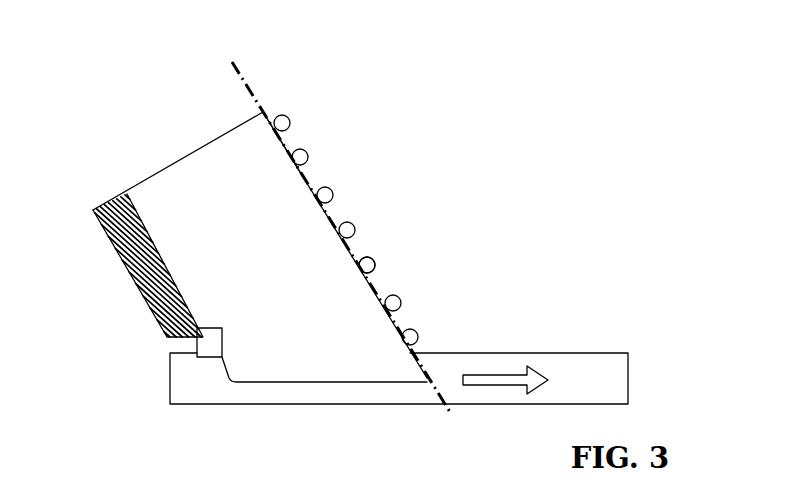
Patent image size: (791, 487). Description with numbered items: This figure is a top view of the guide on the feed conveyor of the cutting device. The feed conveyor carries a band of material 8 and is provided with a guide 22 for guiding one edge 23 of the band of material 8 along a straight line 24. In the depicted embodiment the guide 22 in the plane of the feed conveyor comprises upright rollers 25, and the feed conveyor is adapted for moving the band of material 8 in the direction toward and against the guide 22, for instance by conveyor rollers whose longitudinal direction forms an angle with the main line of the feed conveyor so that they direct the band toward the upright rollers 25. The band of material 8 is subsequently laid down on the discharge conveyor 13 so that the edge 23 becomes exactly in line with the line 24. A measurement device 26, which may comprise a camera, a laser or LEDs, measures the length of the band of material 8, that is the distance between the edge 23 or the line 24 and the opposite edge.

The band of material 8 is at (167, 165).
The discharge conveyor 13 is at (197, 387).
The guide 22 is at (273, 112).
The edge 23 is at (372, 273).
The straight line 24 is at (250, 92).
The upright rollers 25 is at (307, 153).
The measurement device 26 is at (197, 347).